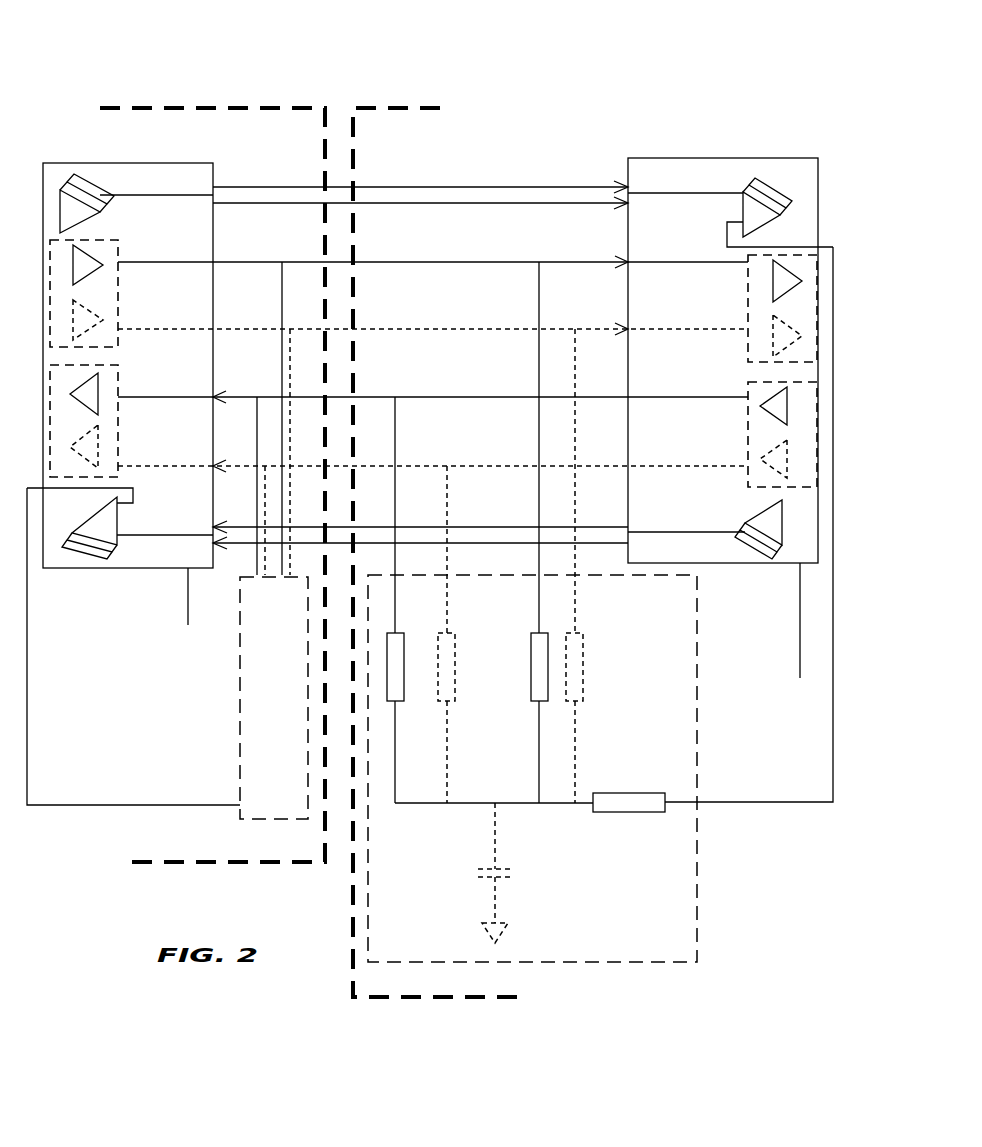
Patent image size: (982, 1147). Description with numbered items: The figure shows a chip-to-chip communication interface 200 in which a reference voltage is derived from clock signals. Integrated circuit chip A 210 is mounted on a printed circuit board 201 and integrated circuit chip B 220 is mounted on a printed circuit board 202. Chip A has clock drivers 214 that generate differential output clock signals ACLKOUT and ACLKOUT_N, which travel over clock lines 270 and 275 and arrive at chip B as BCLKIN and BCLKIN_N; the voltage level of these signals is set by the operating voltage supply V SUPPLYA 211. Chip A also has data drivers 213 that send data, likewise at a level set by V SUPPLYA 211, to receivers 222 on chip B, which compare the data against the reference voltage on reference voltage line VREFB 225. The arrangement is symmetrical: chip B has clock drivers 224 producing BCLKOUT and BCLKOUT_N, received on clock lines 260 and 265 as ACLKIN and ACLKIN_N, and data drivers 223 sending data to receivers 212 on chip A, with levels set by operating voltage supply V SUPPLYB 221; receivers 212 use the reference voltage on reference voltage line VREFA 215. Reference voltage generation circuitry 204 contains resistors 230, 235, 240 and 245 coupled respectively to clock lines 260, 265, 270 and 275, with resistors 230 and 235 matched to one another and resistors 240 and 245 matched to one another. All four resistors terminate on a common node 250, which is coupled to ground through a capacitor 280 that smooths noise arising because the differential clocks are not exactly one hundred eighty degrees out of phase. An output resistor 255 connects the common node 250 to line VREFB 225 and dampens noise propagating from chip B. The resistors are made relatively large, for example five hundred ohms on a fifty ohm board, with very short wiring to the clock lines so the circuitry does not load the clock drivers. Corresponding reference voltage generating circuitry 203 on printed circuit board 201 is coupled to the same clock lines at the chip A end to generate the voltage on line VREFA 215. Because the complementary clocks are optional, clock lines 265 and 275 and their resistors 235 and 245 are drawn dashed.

The chip-to-chip communication interface 200 is at (208, 57).
The printed circuit board 201 is at (253, 149).
The printed circuit board 202 is at (417, 149).
The reference voltage generating circuitry 203 is at (293, 781).
The reference voltage generation circuitry 204 is at (655, 941).
The integrated circuit chip A 210 is at (51, 165).
The operating voltage supply V SUPPLYA 211 is at (161, 627).
The receivers 212 is at (127, 560).
The data drivers 213 is at (86, 164).
The clock drivers 214 is at (52, 260).
The reference voltage line VREFA 215 is at (193, 810).
The integrated circuit chip B 220 is at (722, 170).
The operating voltage supply V SUPPLYB 221 is at (775, 648).
The receivers 222 is at (781, 168).
The data drivers 223 is at (743, 572).
The clock drivers 224 is at (753, 478).
The reference voltage line VREFB 225 is at (710, 803).
The resistor 230 is at (410, 637).
The resistor 235 is at (448, 675).
The resistor 240 is at (530, 655).
The resistor 245 is at (577, 675).
The common node 250 is at (470, 805).
The output resistor 255 is at (632, 793).
The clock line 260 is at (447, 396).
The clock line 265 is at (455, 465).
The clock line 270 is at (567, 262).
The clock line 275 is at (580, 328).
The capacitor 280 is at (515, 870).